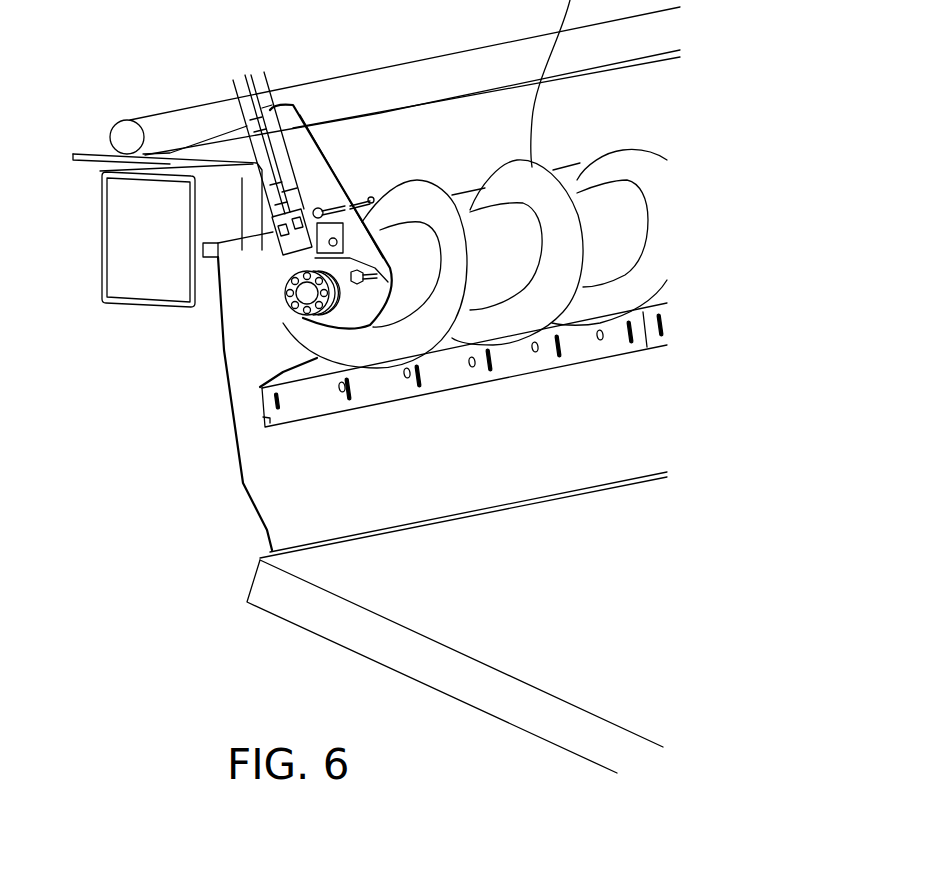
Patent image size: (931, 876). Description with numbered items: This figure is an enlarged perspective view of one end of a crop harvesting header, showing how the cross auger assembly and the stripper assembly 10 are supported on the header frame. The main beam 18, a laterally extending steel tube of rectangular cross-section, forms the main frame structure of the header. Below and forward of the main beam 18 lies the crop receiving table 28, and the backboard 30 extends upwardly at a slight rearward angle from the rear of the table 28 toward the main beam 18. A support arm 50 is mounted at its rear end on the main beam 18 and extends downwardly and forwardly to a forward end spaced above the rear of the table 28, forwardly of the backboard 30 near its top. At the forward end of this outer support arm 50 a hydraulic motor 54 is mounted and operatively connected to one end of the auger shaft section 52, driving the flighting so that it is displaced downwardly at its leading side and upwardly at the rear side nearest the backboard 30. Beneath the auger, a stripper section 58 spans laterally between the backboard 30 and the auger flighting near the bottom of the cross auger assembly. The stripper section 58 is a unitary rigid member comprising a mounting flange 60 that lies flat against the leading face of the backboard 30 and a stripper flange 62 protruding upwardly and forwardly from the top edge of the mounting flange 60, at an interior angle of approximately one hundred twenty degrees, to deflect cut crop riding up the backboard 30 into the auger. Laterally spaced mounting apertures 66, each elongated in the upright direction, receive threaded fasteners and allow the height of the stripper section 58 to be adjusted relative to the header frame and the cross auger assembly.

The stripper assembly 10 is at (249, 404).
The main beam 18 is at (115, 243).
The crop receiving table 28 is at (480, 643).
The backboard 30 is at (400, 473).
The support arm 50 is at (293, 137).
The auger shaft section 52 is at (408, 190).
The hydraulic motor 54 is at (302, 293).
The stripper section 58 is at (358, 420).
The mounting flange 60 is at (267, 420).
The stripper flange 62 is at (278, 368).
The mounting aperture 66 is at (353, 397).